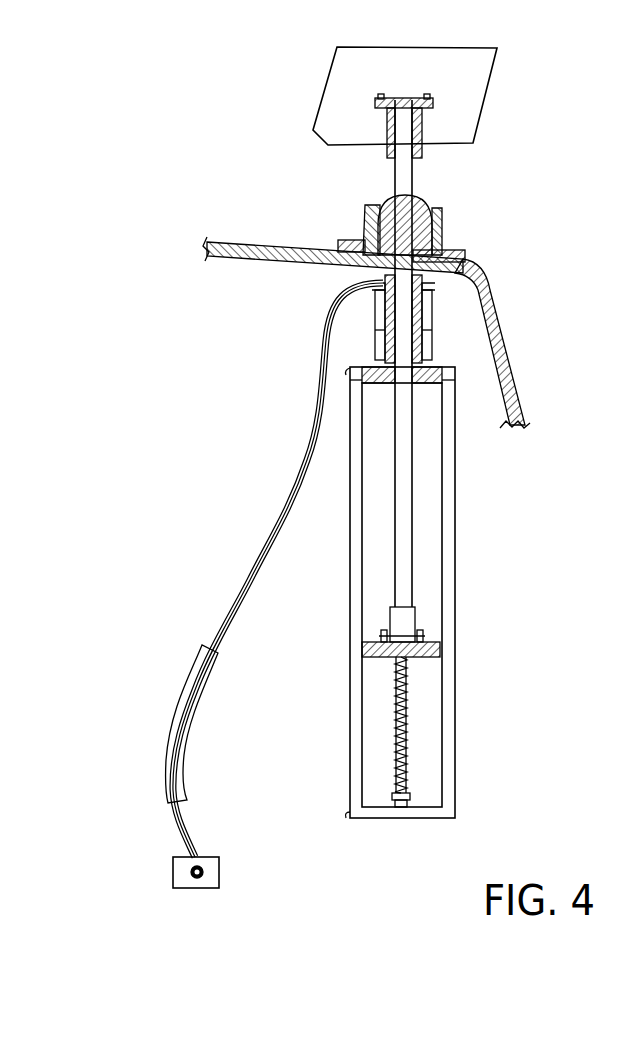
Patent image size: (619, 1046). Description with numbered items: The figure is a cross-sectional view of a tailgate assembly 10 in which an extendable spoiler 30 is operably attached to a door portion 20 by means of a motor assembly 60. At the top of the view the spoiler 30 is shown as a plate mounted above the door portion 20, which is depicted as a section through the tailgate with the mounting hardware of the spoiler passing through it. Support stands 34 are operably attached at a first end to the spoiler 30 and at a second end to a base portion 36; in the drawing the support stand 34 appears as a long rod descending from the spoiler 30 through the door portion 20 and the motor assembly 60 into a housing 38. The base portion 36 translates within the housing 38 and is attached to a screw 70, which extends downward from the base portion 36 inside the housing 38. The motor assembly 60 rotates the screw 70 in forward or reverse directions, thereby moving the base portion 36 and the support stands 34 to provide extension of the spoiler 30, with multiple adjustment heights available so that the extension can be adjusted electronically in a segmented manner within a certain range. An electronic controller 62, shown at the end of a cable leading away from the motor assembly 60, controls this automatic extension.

The tailgate assembly 10 is at (258, 126).
The door portion 20 is at (268, 252).
The extendable spoiler 30 is at (468, 104).
The support stands 34 is at (403, 540).
The base portion 36 is at (437, 650).
The housing 38 is at (445, 673).
The motor assembly 60 is at (420, 333).
The electronic controller 62 is at (216, 856).
The screw 70 is at (408, 748).